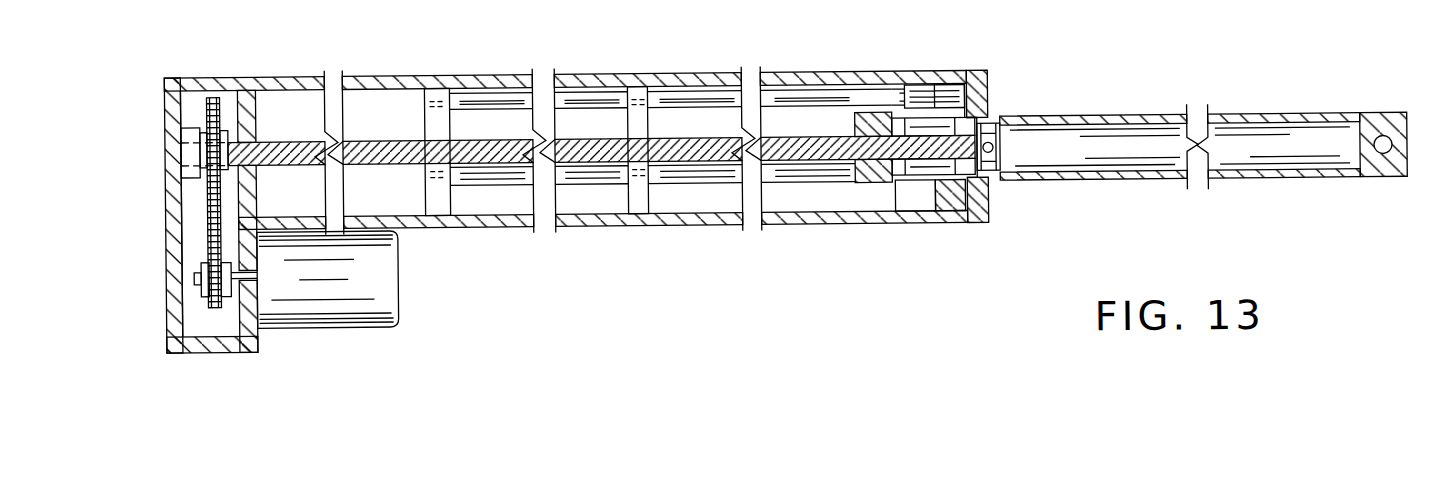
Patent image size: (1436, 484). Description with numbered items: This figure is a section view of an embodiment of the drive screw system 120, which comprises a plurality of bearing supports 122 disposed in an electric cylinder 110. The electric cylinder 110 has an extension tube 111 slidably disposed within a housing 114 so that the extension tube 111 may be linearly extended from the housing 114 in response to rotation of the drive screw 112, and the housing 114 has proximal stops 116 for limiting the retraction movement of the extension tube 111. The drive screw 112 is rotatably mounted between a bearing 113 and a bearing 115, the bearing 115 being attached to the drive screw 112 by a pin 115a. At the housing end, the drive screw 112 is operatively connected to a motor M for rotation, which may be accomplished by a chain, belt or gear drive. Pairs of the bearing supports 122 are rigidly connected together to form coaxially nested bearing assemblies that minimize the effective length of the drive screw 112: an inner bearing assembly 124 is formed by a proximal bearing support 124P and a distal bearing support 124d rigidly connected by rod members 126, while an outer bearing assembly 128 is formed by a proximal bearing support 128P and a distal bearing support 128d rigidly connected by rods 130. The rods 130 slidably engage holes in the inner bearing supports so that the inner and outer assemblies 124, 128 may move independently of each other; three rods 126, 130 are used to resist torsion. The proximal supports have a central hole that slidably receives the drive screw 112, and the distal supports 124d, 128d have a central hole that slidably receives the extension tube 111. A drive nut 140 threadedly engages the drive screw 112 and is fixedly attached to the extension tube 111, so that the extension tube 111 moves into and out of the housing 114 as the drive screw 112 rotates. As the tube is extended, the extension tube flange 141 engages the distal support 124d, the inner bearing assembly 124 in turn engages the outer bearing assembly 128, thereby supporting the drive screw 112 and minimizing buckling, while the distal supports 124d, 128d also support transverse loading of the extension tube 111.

The electric cylinder 110 is at (758, 298).
The extension tube 111 is at (1300, 122).
The drive screw 112 is at (592, 226).
The bearing 113 is at (191, 124).
The housing 114 is at (818, 230).
The bearing 115 is at (995, 186).
The pin 115a is at (992, 132).
The proximal stops 116 is at (244, 93).
The drive screw system 120 is at (996, 44).
The bearing supports 122 is at (437, 226).
The inner bearing assembly 124 is at (625, 72).
The proximal bearing support 124P is at (644, 94).
The distal bearing support 124d is at (877, 95).
The rod members 126 is at (805, 103).
The outer bearing assembly 128 is at (411, 72).
The proximal bearing support 128P is at (440, 91).
The distal bearing support 128d is at (943, 87).
The rods 130 is at (490, 99).
The drive nut 140 is at (873, 221).
The extension tube flange 141 is at (870, 200).
The motor M is at (315, 304).